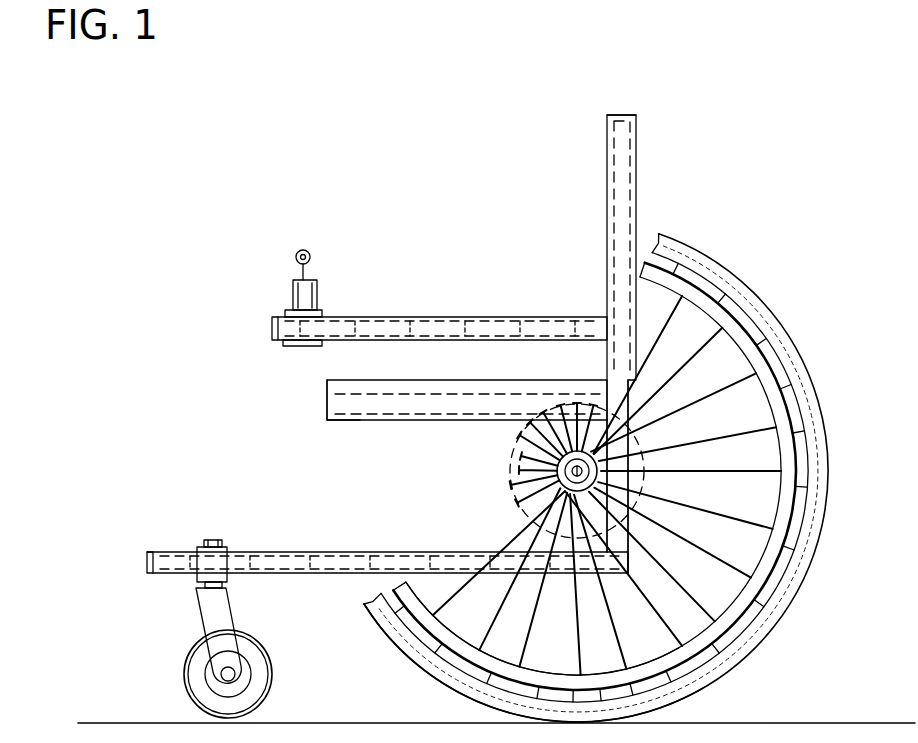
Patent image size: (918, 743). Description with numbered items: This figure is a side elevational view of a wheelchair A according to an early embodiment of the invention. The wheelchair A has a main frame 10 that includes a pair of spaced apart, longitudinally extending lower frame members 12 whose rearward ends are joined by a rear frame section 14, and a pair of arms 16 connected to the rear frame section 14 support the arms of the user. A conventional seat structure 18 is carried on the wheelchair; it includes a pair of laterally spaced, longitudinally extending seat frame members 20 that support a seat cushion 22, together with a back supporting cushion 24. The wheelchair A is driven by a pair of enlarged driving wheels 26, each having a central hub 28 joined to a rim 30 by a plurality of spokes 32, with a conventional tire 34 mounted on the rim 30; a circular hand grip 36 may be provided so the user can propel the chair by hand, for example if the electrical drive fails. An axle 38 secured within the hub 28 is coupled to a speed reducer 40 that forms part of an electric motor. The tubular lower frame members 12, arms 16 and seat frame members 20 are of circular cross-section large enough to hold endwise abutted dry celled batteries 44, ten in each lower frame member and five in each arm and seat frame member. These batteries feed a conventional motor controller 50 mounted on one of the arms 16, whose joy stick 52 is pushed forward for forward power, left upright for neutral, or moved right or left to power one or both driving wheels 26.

The wheelchair A is at (366, 165).
The main frame 10 is at (276, 531).
The lower frame members 12 is at (373, 551).
The rear frame section 14 is at (608, 140).
The arms 16 is at (490, 316).
The seat structure 18 is at (441, 386).
The seat frame members 20 is at (412, 410).
The seat cushion 22 is at (327, 381).
The back supporting cushion 24 is at (607, 190).
The driving wheels 26 is at (688, 246).
The central hub 28 is at (508, 500).
The rim 30 is at (724, 293).
The spokes 32 is at (728, 430).
The tire 34 is at (740, 665).
The circular hand grip 36 is at (405, 664).
The axle 38 is at (600, 392).
The speed reducer 40 is at (522, 462).
The dry celled batteries 44 is at (407, 320).
The motor controller 50 is at (283, 292).
The joy stick 52 is at (307, 249).